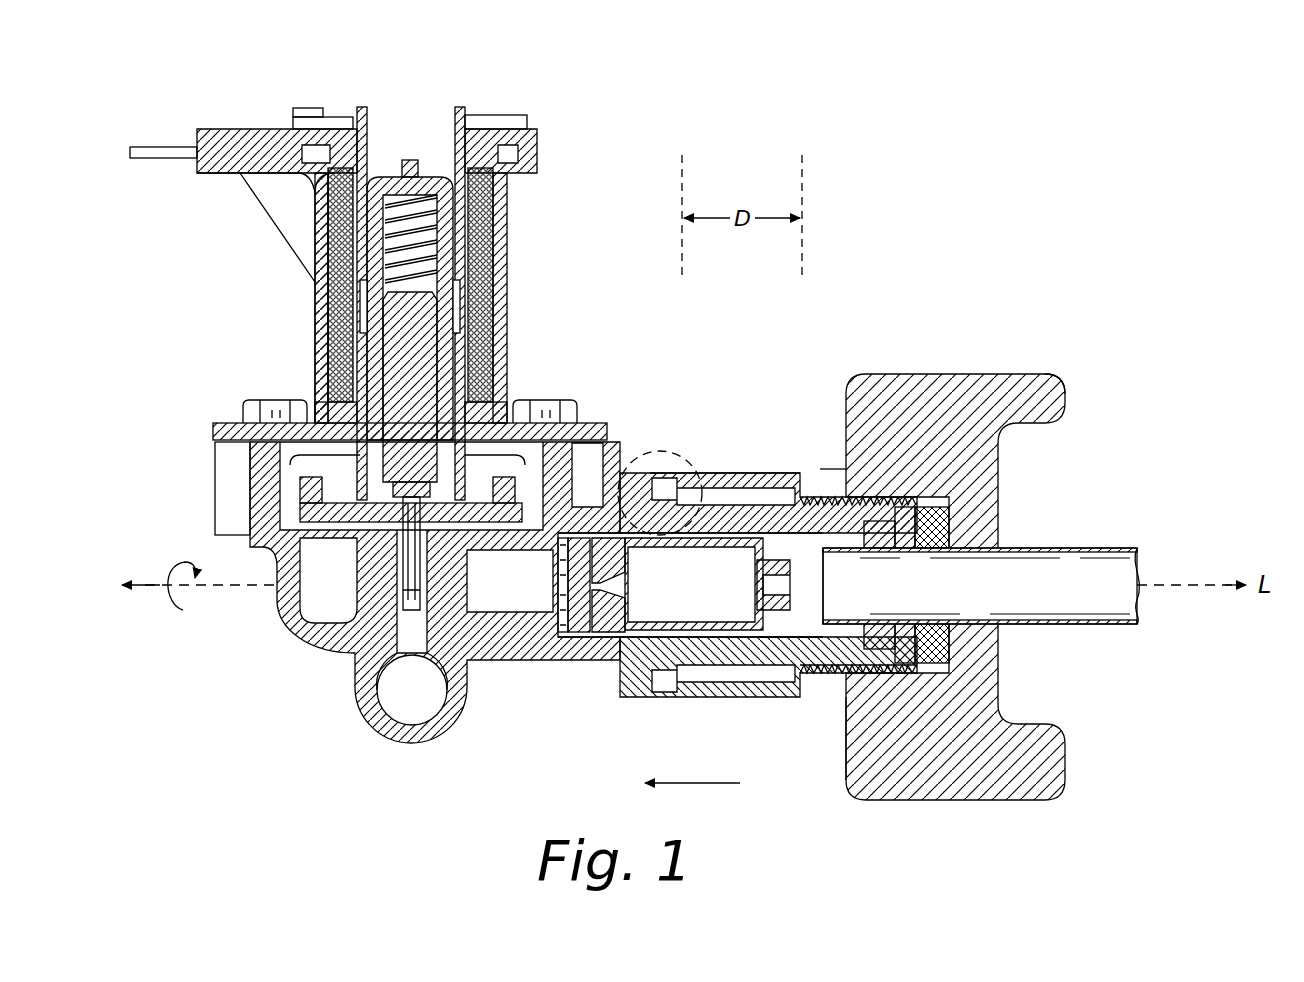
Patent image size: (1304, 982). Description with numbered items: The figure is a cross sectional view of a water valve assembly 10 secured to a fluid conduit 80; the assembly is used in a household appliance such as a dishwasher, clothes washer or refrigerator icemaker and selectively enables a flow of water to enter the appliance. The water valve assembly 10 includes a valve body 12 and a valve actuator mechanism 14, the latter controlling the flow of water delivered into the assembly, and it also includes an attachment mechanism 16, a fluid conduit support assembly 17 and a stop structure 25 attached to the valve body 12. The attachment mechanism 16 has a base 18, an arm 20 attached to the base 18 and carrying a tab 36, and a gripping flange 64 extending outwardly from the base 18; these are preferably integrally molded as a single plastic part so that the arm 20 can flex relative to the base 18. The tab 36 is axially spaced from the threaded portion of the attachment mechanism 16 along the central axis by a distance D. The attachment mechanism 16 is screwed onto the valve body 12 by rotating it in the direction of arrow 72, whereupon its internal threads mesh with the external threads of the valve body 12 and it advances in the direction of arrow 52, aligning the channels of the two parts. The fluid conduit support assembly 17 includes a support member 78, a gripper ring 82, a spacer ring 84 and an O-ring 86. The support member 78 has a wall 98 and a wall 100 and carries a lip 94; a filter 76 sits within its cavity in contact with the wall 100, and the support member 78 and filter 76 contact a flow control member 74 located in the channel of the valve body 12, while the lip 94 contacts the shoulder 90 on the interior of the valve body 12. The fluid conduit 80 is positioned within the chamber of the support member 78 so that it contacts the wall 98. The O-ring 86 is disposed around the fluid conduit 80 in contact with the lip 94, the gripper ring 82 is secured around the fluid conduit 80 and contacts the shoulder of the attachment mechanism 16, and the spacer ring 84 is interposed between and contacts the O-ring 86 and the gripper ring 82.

The water valve assembly 10 is at (1012, 157).
The valve body 12 is at (590, 652).
The valve actuator mechanism 14 is at (245, 330).
The attachment mechanism 16 is at (790, 392).
The fluid conduit support assembly 17 is at (870, 690).
The base 18 is at (990, 470).
The arm 20 is at (745, 475).
The stop structure 25 is at (677, 438).
The tab 36 is at (652, 470).
The arrow 52 is at (690, 780).
The gripping flange 64 is at (1052, 380).
The arrow 72 is at (180, 575).
The flow control member 74 is at (625, 650).
The filter 76 is at (668, 625).
The support member 78 is at (778, 640).
The fluid conduit 80 is at (1100, 548).
The gripper ring 82 is at (935, 660).
The spacer ring 84 is at (933, 640).
The O-ring 86 is at (905, 520).
The shoulder 90 is at (830, 660).
The lip 94 is at (890, 645).
The wall 98 is at (828, 608).
The wall 100 is at (752, 620).